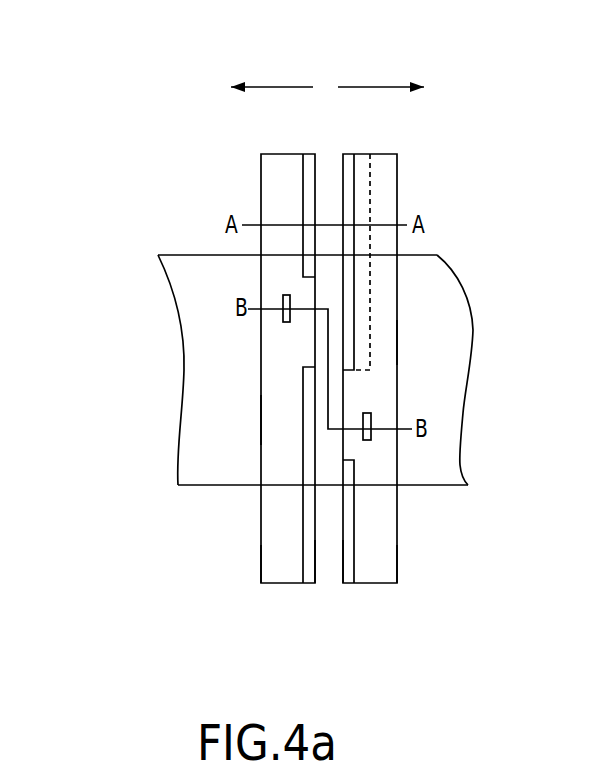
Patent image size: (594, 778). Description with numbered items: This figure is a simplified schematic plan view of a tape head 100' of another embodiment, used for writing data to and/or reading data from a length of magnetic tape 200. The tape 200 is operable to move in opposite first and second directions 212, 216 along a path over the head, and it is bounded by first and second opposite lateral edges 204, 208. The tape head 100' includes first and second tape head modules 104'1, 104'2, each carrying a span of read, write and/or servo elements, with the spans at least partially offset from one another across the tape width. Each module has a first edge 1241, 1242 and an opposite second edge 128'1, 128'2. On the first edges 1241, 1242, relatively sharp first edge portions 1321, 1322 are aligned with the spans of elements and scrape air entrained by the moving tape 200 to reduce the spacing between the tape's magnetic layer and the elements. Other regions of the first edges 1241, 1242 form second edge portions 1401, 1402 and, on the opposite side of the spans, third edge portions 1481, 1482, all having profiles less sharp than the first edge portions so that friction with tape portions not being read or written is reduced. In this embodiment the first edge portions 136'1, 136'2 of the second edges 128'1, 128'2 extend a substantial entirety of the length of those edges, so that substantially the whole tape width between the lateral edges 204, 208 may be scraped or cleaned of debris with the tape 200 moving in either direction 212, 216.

The tape head 100' is at (69, 138).
The first tape head module 104'1 is at (235, 347).
The second tape head module 104'2 is at (411, 341).
The first edge of first module 1241 is at (322, 577).
The first edge of second module 1242 is at (336, 570).
The second edge of first module 128'1 is at (204, 582).
The second edge of second module 128'2 is at (448, 582).
The first edge portion of first module 1321 is at (316, 302).
The first edge portion of second module 1322 is at (331, 397).
The first edge portion of second edge of first module 136'1 is at (220, 420).
The first edge portion of second edge of second module 136'2 is at (473, 340).
The second edge portion of first module 1401 is at (344, 481).
The second edge portion of second module 1402 is at (342, 193).
The third edge portion of first module 1481 is at (318, 167).
The third edge portion of second module 1482 is at (342, 550).
The magnetic tape 200 is at (176, 486).
The first lateral edge of tape 204 is at (190, 487).
The second lateral edge of tape 208 is at (182, 253).
The first direction 212 is at (270, 87).
The second direction 216 is at (390, 87).